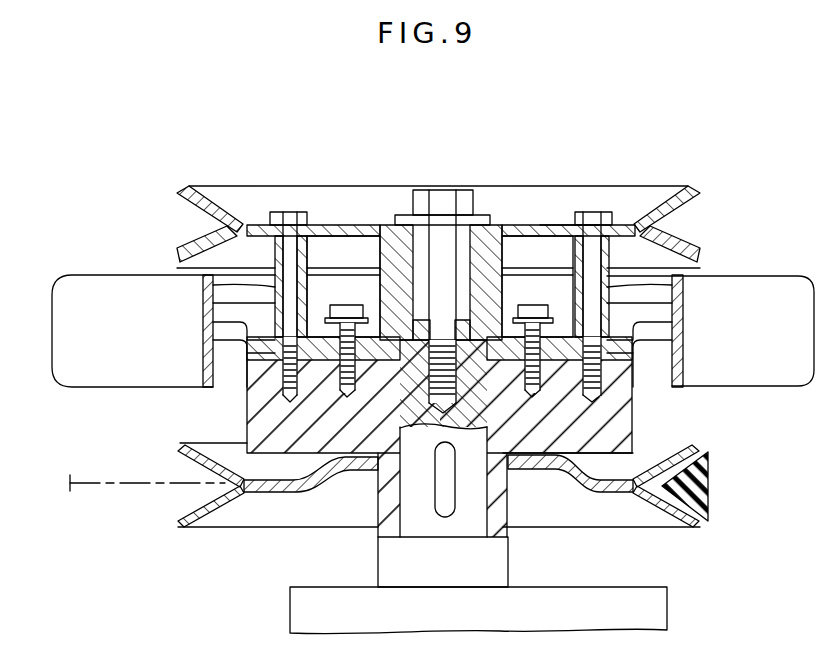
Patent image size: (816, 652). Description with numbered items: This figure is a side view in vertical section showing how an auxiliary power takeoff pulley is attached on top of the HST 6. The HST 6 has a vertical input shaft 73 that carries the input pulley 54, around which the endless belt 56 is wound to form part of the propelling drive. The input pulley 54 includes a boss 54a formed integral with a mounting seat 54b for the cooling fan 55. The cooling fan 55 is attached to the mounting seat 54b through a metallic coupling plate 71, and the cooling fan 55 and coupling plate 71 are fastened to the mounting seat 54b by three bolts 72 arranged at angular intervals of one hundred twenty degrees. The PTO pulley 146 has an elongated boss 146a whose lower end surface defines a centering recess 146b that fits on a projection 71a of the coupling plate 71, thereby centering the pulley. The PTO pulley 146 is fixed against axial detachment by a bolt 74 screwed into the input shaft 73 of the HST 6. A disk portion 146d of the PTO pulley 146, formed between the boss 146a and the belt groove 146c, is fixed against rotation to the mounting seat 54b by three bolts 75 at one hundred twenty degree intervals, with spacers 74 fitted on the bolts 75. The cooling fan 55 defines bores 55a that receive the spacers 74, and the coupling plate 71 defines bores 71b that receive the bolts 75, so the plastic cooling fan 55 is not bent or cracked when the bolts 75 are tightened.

The HST 6 is at (652, 607).
The input pulley 54 is at (262, 488).
The boss 54a is at (378, 512).
The mounting seat 54b is at (632, 428).
The cooling fan 55 is at (90, 275).
The bores 55a is at (683, 305).
The endless belt 56 is at (708, 488).
The metallic coupling plate 71 is at (683, 352).
The projection 71a is at (497, 305).
The bores 71b is at (248, 392).
The bolts 72 is at (343, 305).
The input shaft 73 is at (475, 497).
The bolt / spacers 74 is at (205, 311).
The bolts 75 is at (285, 212).
The PTO pulley 146 is at (174, 182).
The elongated boss 146a is at (378, 255).
The centering recess 146b is at (400, 322).
The groove 146c is at (690, 240).
The disk portion 146d is at (557, 225).